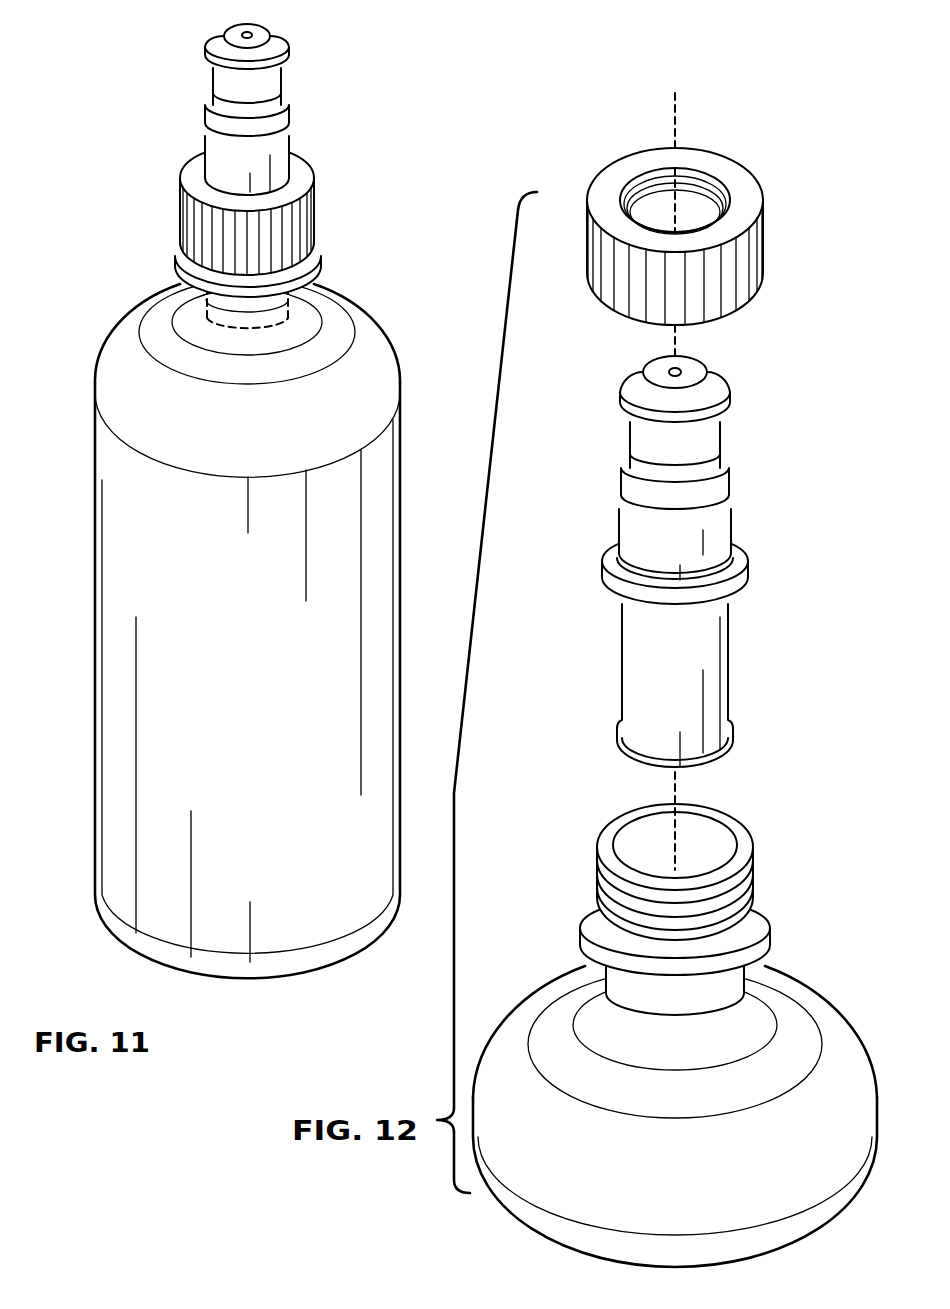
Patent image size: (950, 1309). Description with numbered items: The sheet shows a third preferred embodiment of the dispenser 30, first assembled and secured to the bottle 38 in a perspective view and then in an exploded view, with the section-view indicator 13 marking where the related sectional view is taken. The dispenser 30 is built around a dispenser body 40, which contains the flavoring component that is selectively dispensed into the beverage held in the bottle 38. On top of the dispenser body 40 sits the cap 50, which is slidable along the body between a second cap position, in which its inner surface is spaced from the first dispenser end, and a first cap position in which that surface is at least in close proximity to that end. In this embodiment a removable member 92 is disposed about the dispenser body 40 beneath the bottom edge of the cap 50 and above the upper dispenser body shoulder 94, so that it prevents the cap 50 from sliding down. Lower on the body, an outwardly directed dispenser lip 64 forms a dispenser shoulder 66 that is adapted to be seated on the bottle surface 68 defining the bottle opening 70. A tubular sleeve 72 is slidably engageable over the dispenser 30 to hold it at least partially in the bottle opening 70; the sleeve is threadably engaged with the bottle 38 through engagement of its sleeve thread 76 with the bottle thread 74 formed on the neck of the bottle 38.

In FIG. 11, the section view indicator for FIG. 13 is at (122, 100).
In FIG. 11, the dispenser 30 is at (324, 106).
In FIG. 12, the dispenser 30 is at (718, 559).
In FIG. 11, the bottle 38 is at (261, 637).
In FIG. 12, the bottle 38 is at (686, 1180).
In FIG. 11, the dispenser body 40 is at (278, 156).
In FIG. 12, the dispenser body 40 is at (705, 476).
In FIG. 11, the cap 50 is at (224, 36).
In FIG. 12, the cap 50 is at (628, 388).
In FIG. 12, the dispenser lip 64 is at (735, 570).
In FIG. 12, the dispenser shoulder 66 is at (735, 590).
In FIG. 12, the bottle surface 68 is at (735, 862).
In FIG. 12, the bottle opening 70 is at (697, 838).
In FIG. 11, the tubular sleeve 72 is at (190, 216).
In FIG. 12, the tubular sleeve 72 is at (720, 211).
In FIG. 12, the bottle thread 74 is at (715, 859).
In FIG. 12, the sleeve thread 76 is at (693, 190).
In FIG. 11, the removable member 92 is at (288, 96).
In FIG. 12, the removable member 92 is at (637, 460).
In FIG. 11, the upper dispenser body shoulder 94 is at (283, 119).
In FIG. 12, the upper dispenser body shoulder 94 is at (632, 485).